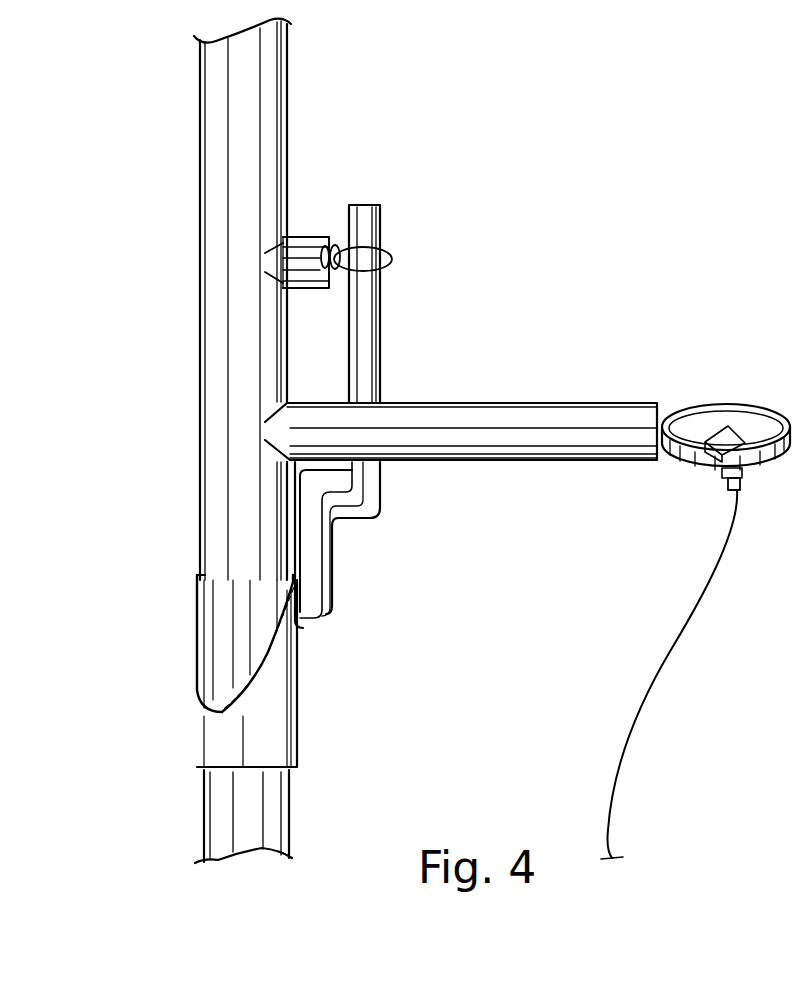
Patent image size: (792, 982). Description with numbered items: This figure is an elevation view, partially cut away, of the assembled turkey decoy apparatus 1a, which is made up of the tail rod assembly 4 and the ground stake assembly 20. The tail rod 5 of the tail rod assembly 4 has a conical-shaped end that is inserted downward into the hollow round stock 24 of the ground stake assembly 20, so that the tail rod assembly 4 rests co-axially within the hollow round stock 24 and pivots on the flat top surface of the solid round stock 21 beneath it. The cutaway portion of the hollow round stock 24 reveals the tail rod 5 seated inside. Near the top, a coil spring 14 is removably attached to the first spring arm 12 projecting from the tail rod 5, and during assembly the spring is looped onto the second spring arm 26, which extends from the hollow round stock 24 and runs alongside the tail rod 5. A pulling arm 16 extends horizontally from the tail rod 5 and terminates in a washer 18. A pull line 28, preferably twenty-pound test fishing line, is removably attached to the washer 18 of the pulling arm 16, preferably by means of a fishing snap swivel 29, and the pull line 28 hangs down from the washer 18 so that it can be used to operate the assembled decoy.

The turkey decoy apparatus 1a is at (567, 305).
The tail rod assembly 4 is at (160, 273).
The tail rod 5 is at (289, 125).
The first spring arm 12 is at (298, 290).
The coil spring 14 is at (333, 251).
The pulling arm 16 is at (566, 403).
The washer 18 is at (745, 407).
The ground stake assembly 20 is at (172, 723).
The solid round stock 21 is at (290, 826).
The hollow round stock 24 is at (330, 720).
The second spring arm 26 is at (382, 329).
The pull line 28 is at (640, 703).
The fishing snap swivel 29 is at (742, 483).